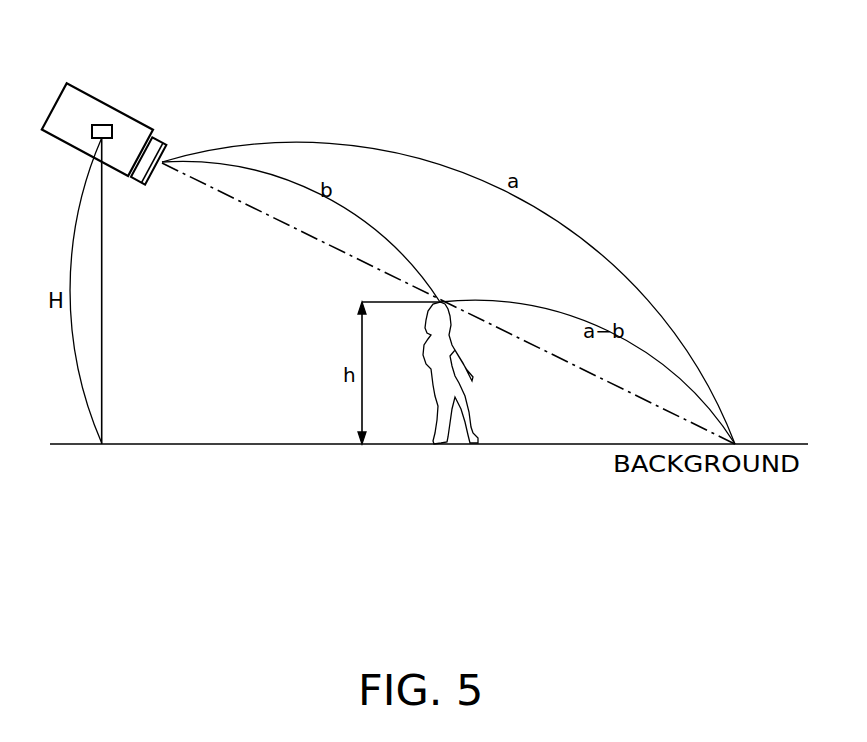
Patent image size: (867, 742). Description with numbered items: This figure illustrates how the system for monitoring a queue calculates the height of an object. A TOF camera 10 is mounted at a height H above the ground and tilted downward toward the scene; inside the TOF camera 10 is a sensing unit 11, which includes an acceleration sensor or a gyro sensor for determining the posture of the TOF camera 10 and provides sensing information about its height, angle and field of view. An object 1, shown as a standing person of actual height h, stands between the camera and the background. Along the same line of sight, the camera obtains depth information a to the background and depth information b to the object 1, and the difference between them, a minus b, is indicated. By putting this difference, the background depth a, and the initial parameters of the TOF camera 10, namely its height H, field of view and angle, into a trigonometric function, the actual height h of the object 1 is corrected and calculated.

The TOF camera 10 is at (122, 127).
The sensing unit 11 is at (102, 125).
The object 1 is at (448, 370).